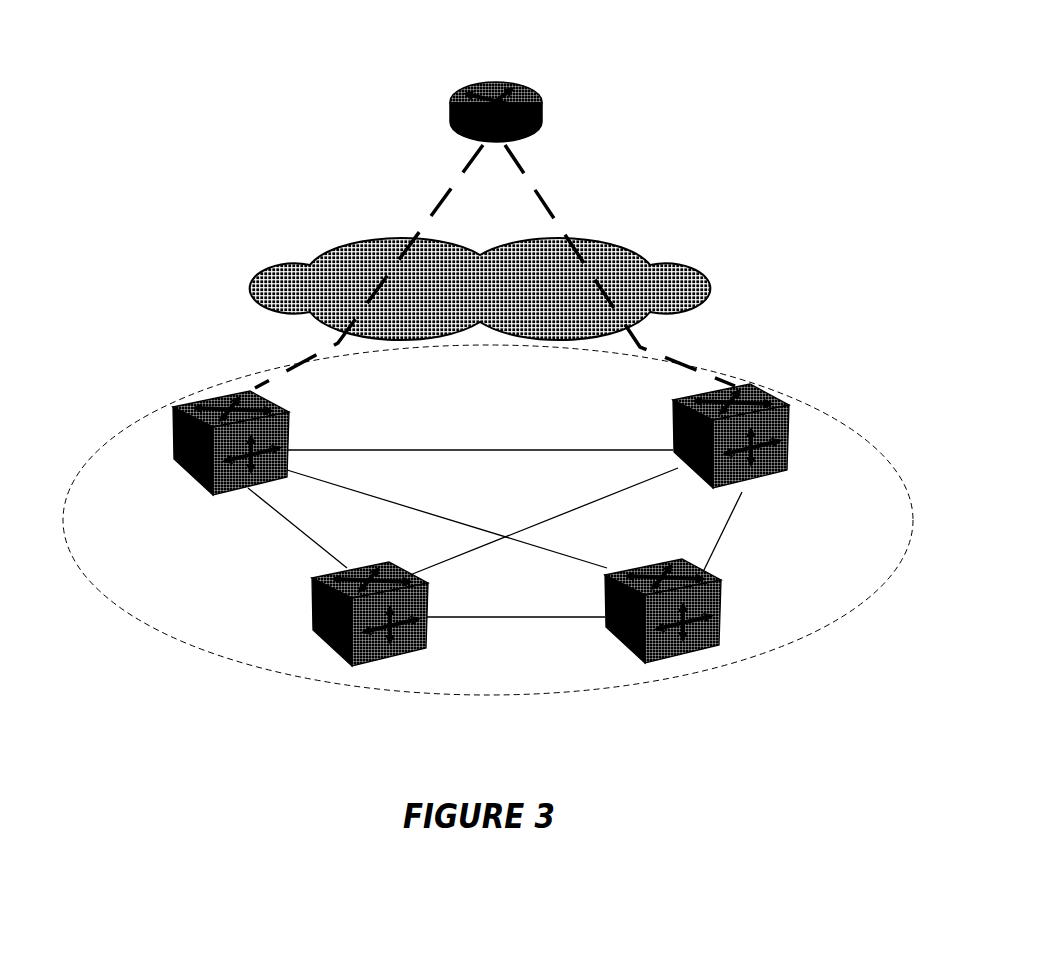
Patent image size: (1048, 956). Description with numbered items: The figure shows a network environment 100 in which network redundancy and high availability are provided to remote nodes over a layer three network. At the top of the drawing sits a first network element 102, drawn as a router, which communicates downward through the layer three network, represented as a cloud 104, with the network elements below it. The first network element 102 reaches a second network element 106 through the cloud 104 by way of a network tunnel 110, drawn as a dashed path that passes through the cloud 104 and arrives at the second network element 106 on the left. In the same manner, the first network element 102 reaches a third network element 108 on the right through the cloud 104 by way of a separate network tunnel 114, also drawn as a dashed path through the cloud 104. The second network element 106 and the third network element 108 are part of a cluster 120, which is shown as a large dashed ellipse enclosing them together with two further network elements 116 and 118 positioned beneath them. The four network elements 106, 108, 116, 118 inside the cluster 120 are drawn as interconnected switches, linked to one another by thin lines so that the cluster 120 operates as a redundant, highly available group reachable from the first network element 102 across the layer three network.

The network environment 100 is at (547, 364).
The first network element 102 is at (442, 97).
The cloud 104 is at (428, 282).
The second network element 106 is at (174, 427).
The third network element 108 is at (779, 430).
The network tunnel 110 is at (369, 266).
The network tunnel 114 is at (620, 265).
The network element 116 is at (309, 611).
The network element 118 is at (720, 610).
The cluster 120 is at (549, 520).